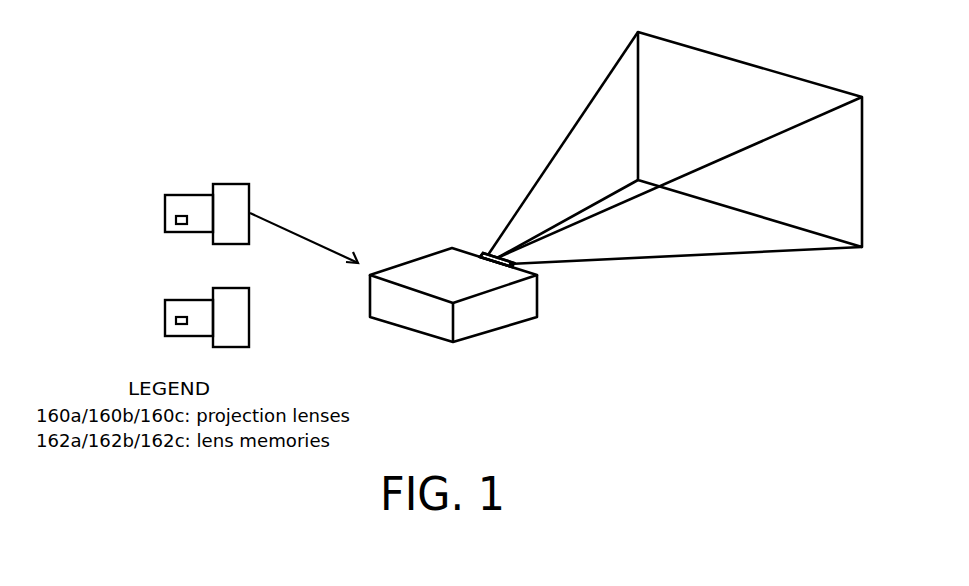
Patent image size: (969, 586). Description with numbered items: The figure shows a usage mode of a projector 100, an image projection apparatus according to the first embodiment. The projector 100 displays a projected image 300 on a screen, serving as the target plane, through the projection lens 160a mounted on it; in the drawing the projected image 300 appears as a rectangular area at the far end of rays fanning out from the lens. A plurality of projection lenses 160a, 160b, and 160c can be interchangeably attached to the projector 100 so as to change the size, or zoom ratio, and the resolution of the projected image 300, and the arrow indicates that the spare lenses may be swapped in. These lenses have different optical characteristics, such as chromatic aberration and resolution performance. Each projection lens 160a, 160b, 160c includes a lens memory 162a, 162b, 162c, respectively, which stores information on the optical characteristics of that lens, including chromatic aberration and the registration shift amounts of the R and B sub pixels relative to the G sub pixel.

The projector 100 is at (400, 263).
The projection lens 160a is at (485, 257).
The projection lens 160b is at (195, 197).
The projection lens 160c is at (195, 300).
The lens memory 162a is at (485, 206).
The lens memory 162b is at (175, 220).
The lens memory 162c is at (175, 321).
The projected image 300 is at (743, 58).